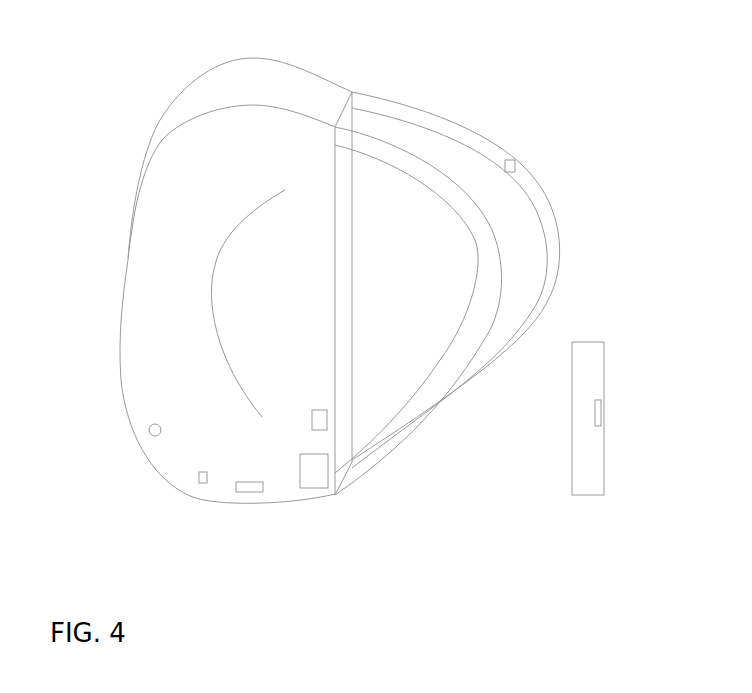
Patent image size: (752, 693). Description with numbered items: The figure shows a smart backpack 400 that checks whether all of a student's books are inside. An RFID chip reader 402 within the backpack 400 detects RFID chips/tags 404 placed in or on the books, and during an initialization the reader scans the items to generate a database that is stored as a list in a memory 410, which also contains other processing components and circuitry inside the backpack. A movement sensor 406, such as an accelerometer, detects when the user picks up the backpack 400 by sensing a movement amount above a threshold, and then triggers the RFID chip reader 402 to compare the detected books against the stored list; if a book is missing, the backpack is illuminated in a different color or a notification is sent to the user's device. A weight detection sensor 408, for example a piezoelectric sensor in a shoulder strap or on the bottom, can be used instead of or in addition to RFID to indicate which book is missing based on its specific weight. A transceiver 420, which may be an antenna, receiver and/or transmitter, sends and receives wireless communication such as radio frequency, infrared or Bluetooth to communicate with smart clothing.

The smart backpack 400 is at (340, 73).
The RFID chip reader 402 is at (313, 480).
The RFID chips/tags 404 is at (598, 410).
The movement sensor 406 is at (199, 478).
The weight detection sensor 408 is at (513, 160).
The memory 410 is at (322, 430).
The transceiver 420 is at (153, 436).